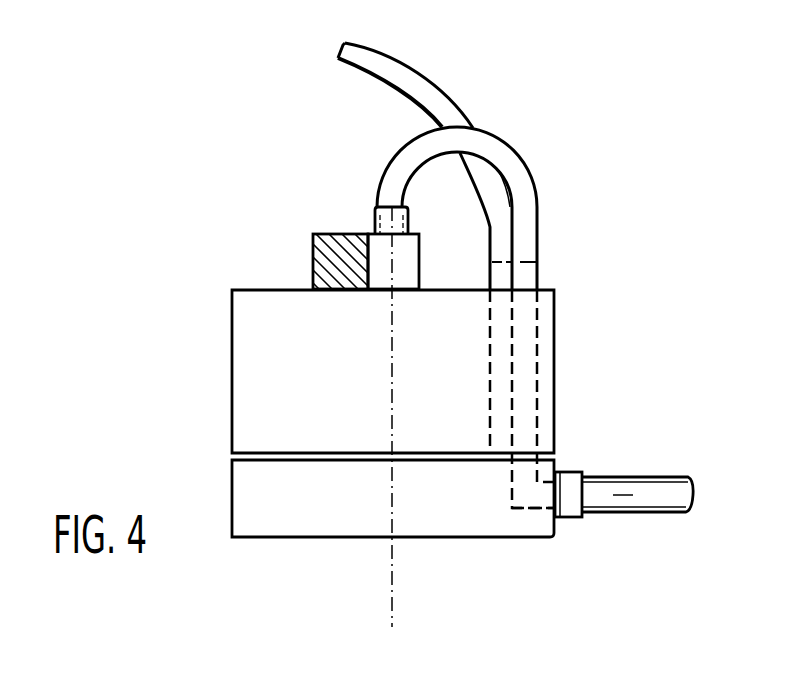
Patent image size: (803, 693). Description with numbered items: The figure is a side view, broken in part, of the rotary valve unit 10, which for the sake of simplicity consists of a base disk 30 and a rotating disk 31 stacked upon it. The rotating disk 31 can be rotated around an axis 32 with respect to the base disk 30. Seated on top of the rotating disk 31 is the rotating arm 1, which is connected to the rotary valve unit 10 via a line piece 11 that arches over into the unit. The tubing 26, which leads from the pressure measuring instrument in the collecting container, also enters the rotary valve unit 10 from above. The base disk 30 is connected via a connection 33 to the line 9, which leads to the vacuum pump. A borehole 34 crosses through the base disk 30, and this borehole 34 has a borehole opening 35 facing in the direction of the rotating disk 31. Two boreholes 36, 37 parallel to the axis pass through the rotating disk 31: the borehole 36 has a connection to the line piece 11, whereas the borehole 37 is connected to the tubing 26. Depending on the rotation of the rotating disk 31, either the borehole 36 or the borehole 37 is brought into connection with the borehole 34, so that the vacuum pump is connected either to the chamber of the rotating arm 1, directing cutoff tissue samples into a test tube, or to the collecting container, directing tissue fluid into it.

The rotating arm 1 is at (331, 226).
The line 9 is at (648, 485).
The rotary valve unit 10 is at (405, 429).
The line piece 11 is at (530, 183).
The tubing 26 is at (437, 90).
The base disk 30 is at (492, 522).
The rotating disk 31 is at (243, 395).
The axis 32 is at (392, 615).
The connection 33 is at (568, 472).
The borehole 34 is at (530, 510).
The borehole opening 35 is at (522, 448).
The borehole parallel to the axis 36 is at (537, 370).
The borehole parallel to the axis 37 is at (490, 350).